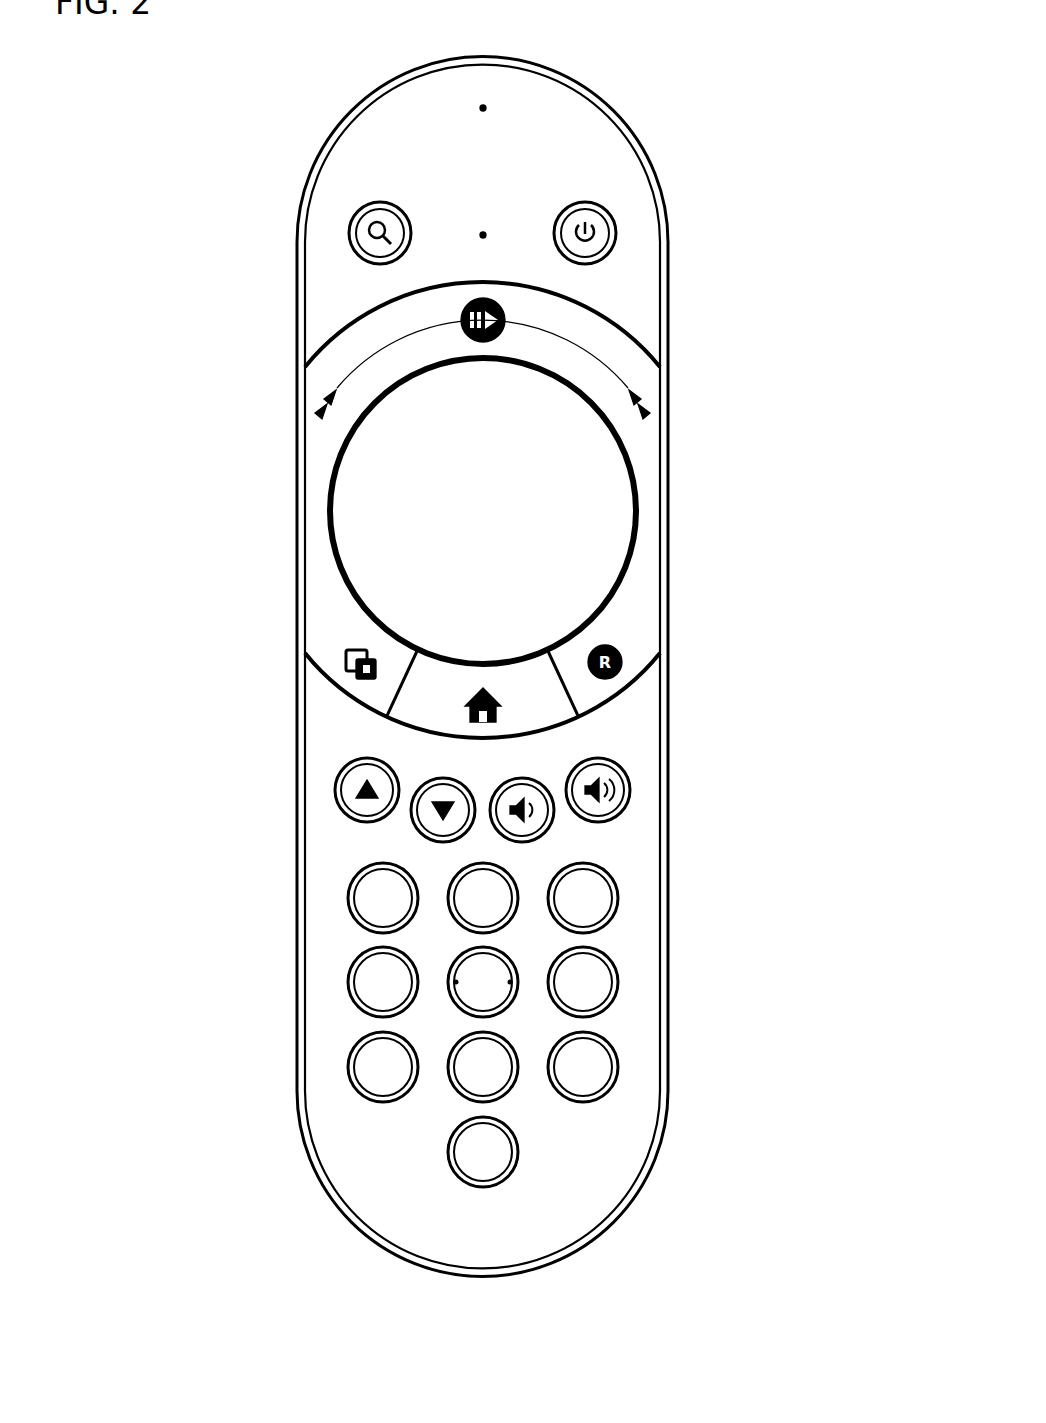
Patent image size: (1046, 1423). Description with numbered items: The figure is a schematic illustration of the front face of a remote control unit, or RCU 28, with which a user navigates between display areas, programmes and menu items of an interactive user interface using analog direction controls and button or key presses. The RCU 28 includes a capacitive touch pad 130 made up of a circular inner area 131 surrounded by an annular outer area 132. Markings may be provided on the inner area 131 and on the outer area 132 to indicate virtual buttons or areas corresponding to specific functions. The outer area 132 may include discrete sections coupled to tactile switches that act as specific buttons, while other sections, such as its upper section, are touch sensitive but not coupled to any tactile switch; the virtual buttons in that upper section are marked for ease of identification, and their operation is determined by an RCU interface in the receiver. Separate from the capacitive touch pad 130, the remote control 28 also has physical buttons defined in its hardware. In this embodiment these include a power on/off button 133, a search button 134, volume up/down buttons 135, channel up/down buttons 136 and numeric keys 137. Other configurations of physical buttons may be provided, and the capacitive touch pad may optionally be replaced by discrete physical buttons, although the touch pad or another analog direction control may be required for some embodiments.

The remote control unit 28 is at (368, 138).
The capacitive touch pad 130 is at (711, 471).
The circular inner area 131 is at (348, 515).
The annular outer area 132 is at (327, 630).
The power on/off button 133 is at (603, 222).
The search button 134 is at (347, 233).
The volume up/down buttons 135 is at (653, 788).
The channel up/down buttons 136 is at (307, 788).
The numeric keys 137 is at (653, 978).